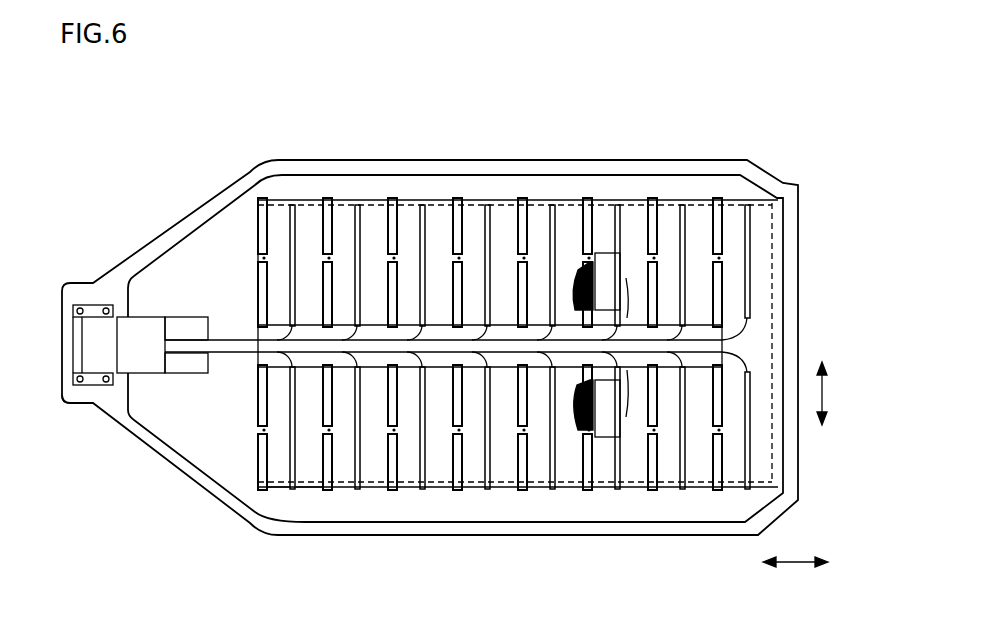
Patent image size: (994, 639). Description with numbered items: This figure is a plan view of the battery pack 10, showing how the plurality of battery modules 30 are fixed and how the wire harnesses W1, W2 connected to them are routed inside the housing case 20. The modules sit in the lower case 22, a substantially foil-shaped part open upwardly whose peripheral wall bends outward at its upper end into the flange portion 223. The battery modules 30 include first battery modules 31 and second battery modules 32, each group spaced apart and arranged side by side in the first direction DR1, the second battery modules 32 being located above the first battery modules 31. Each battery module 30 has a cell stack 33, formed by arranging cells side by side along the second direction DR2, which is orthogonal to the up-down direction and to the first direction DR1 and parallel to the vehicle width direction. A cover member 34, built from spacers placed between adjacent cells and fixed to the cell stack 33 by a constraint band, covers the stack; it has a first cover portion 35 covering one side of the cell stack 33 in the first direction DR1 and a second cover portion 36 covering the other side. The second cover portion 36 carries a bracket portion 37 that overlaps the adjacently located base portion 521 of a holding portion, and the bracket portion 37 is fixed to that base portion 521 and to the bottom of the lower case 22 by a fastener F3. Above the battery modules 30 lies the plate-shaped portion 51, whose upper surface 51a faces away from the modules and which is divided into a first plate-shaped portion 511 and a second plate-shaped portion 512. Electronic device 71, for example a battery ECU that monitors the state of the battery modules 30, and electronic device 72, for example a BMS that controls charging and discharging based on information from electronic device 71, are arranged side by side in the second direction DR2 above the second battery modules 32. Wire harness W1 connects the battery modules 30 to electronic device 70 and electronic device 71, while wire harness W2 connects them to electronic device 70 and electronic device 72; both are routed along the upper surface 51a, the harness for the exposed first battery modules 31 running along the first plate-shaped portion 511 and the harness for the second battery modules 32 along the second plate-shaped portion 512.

The battery pack 10 is at (799, 152).
The housing case 20 is at (430, 386).
The lower case 22 is at (722, 536).
The flange portion 223 is at (89, 398).
The battery module 30 is at (746, 200).
The first battery module 31 is at (422, 282).
The second battery module 32 is at (683, 282).
The cell stack 33 is at (318, 455).
The cover member 34 is at (263, 585).
The first cover portion 35 is at (307, 488).
The second cover portion 36 is at (274, 488).
The bracket portion 37 is at (262, 434).
The plate-shaped portion 51 is at (456, 465).
The upper surface 51a is at (447, 362).
The first plate-shaped portion 511 is at (490, 355).
The second plate-shaped portion 512 is at (660, 362).
The base portion 521 is at (716, 198).
The electronic device 70 is at (142, 315).
The electronic device 71 is at (612, 268).
The electronic device 72 is at (607, 438).
The wire harness W1 is at (227, 345).
The wire harness W2 is at (225, 353).
The fastener F3 is at (256, 431).
The first direction DR1 is at (797, 565).
The second direction DR2 is at (826, 392).